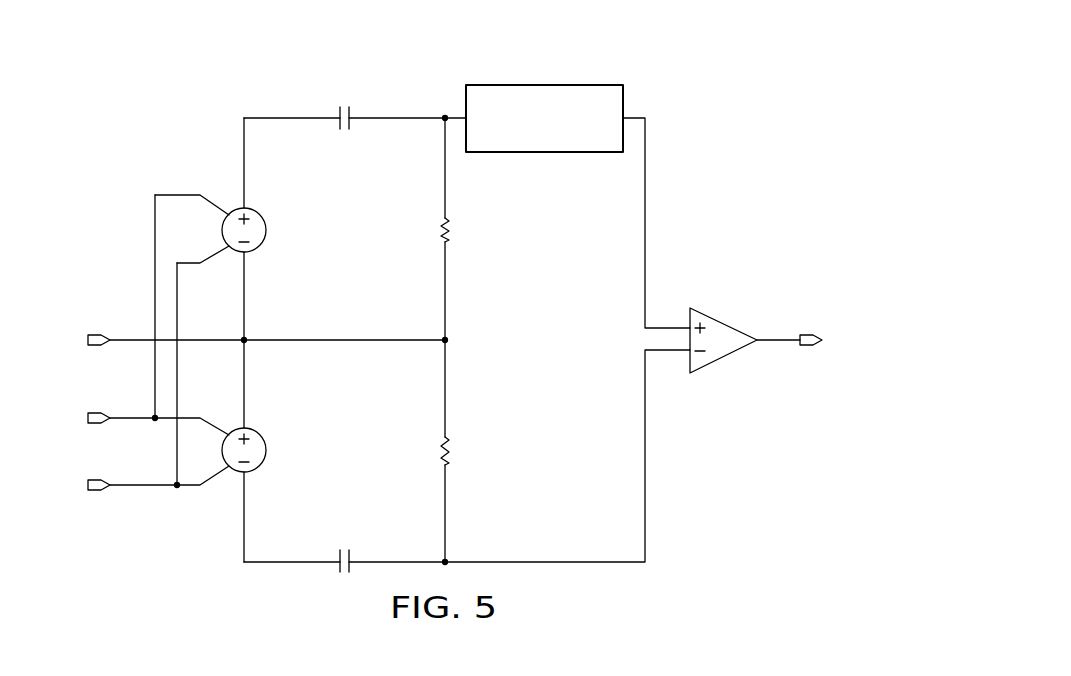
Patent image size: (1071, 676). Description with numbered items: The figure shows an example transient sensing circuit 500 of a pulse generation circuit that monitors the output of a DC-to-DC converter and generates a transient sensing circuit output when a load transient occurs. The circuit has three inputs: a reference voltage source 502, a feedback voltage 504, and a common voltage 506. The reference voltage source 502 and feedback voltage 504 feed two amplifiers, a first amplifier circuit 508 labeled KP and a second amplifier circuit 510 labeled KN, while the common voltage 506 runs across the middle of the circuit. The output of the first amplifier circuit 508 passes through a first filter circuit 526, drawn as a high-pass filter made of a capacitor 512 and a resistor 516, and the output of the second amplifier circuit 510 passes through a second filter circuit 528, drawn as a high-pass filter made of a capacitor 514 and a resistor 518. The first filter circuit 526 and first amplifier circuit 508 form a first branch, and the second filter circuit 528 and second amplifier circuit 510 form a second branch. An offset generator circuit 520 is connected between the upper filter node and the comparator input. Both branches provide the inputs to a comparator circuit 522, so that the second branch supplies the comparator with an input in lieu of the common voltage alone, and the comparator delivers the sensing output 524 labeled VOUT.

The transient sensing circuit 500 is at (784, 61).
The reference voltage source 502 is at (133, 416).
The feedback voltage 504 is at (143, 490).
The common voltage 506 is at (133, 338).
The first amplifier circuit 508 is at (236, 208).
The second amplifier circuit 510 is at (233, 475).
The high-pass filter capacitor CHPF1 512 is at (345, 131).
The high-pass filter capacitor CHPF2 514 is at (344, 574).
The high-pass filter resistor RHPF1 516 is at (440, 228).
The high-pass filter resistor RHPF2 518 is at (440, 455).
The offset generator circuit 520 is at (545, 84).
The comparator circuit 522 is at (721, 321).
The sensing output 524 is at (801, 353).
The first filter circuit 526 is at (275, 88).
The second filter circuit 528 is at (275, 584).